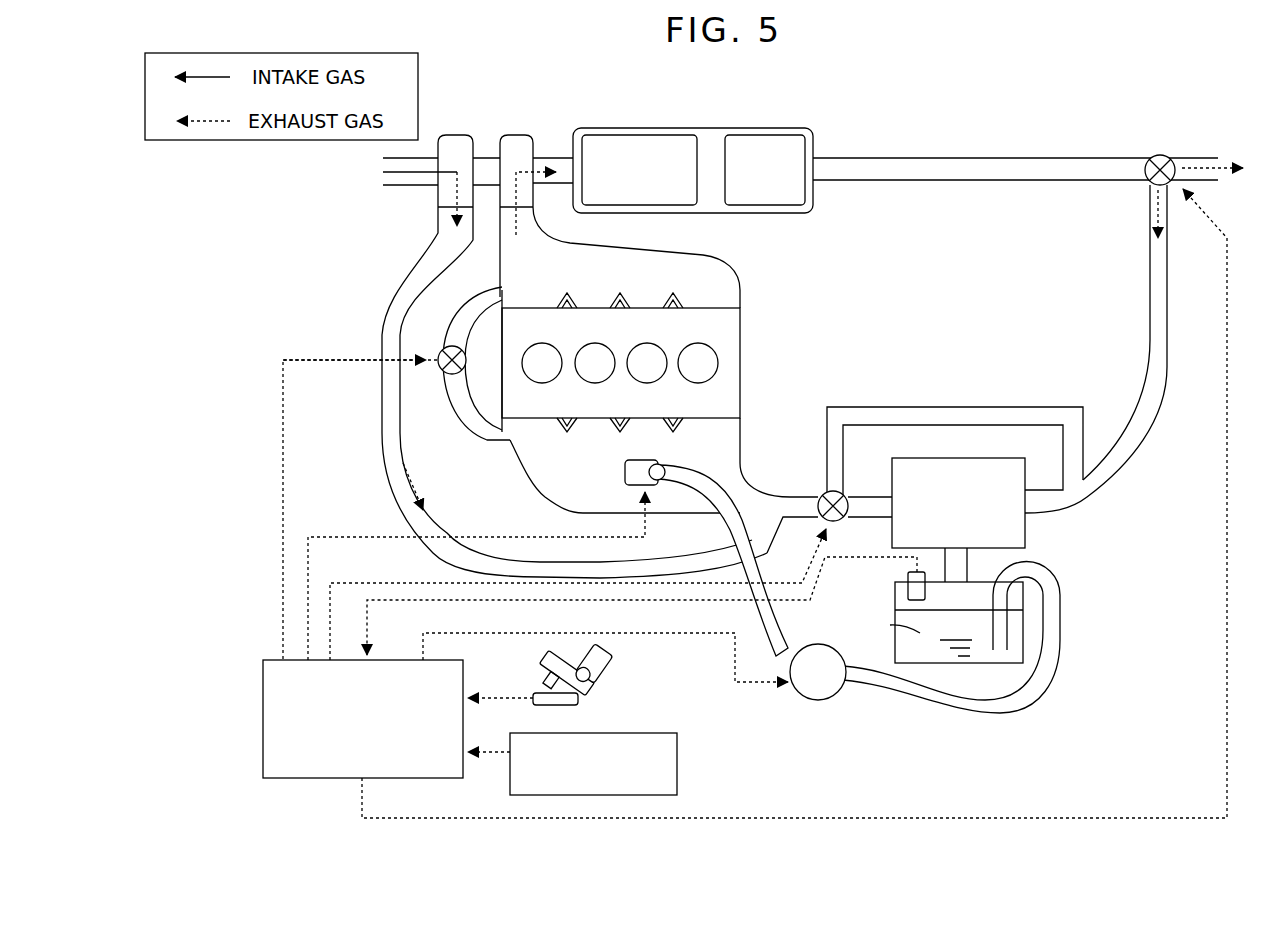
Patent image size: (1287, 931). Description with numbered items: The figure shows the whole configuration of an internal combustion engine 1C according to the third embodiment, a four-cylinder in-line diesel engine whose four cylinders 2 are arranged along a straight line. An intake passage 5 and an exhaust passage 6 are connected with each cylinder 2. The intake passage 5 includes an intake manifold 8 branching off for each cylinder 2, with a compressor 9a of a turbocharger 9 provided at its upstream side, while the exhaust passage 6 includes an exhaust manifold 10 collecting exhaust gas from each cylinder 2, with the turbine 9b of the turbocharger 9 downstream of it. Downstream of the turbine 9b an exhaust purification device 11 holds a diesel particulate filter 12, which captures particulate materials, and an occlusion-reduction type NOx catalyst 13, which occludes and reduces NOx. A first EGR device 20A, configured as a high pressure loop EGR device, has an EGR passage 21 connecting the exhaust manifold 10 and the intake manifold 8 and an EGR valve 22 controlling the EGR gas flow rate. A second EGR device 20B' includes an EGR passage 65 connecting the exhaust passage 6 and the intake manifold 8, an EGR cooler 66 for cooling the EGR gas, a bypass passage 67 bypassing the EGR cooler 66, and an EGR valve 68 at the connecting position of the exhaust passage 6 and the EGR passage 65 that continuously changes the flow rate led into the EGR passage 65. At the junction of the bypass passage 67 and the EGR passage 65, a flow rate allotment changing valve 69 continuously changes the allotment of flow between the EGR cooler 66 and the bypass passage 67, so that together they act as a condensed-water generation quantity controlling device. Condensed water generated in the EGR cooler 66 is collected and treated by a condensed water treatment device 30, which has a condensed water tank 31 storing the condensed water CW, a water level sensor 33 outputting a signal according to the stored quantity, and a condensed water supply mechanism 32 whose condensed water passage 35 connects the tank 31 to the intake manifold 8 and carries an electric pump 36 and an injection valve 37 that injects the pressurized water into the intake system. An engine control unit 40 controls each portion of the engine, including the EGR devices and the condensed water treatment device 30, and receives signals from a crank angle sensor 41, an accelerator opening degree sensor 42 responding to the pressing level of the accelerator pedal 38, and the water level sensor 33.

The internal combustion engine 1C is at (352, 222).
The cylinder 2 is at (553, 375).
The intake passage 5 is at (379, 329).
The exhaust passage 6 is at (558, 153).
The intake manifold 8 is at (518, 488).
The turbocharger 9 is at (484, 135).
The compressor 9a is at (457, 150).
The turbine 9b is at (516, 156).
The exhaust manifold 10 is at (707, 259).
The exhaust purification device 11 is at (693, 132).
The diesel particulate filter 12 is at (642, 145).
The occlusion-reduction type NOx catalyst 13 is at (770, 145).
The first EGR device 20A is at (420, 369).
The second EGR device 20B' is at (980, 344).
The EGR passage 21 is at (462, 440).
The EGR valve 22 is at (447, 380).
The condensed water treatment device 30 is at (897, 627).
The condensed water tank 31 is at (905, 647).
The condensed water supply mechanism 32 is at (1069, 716).
The water level sensor 33 is at (906, 585).
The condensed water passage 35 is at (913, 702).
The electric pump 36 is at (813, 700).
The injection valve 37 is at (652, 489).
The accelerator pedal 38 is at (543, 657).
The engine control unit 40 is at (263, 658).
The crank angle sensor 41 is at (678, 781).
The accelerator opening degree sensor 42 is at (595, 703).
The EGR passage 65 is at (1103, 497).
The EGR cooler 66 is at (893, 475).
The bypass passage 67 is at (905, 406).
The EGR valve 68 is at (1167, 157).
The flow rate allotment changing valve 69 is at (820, 493).